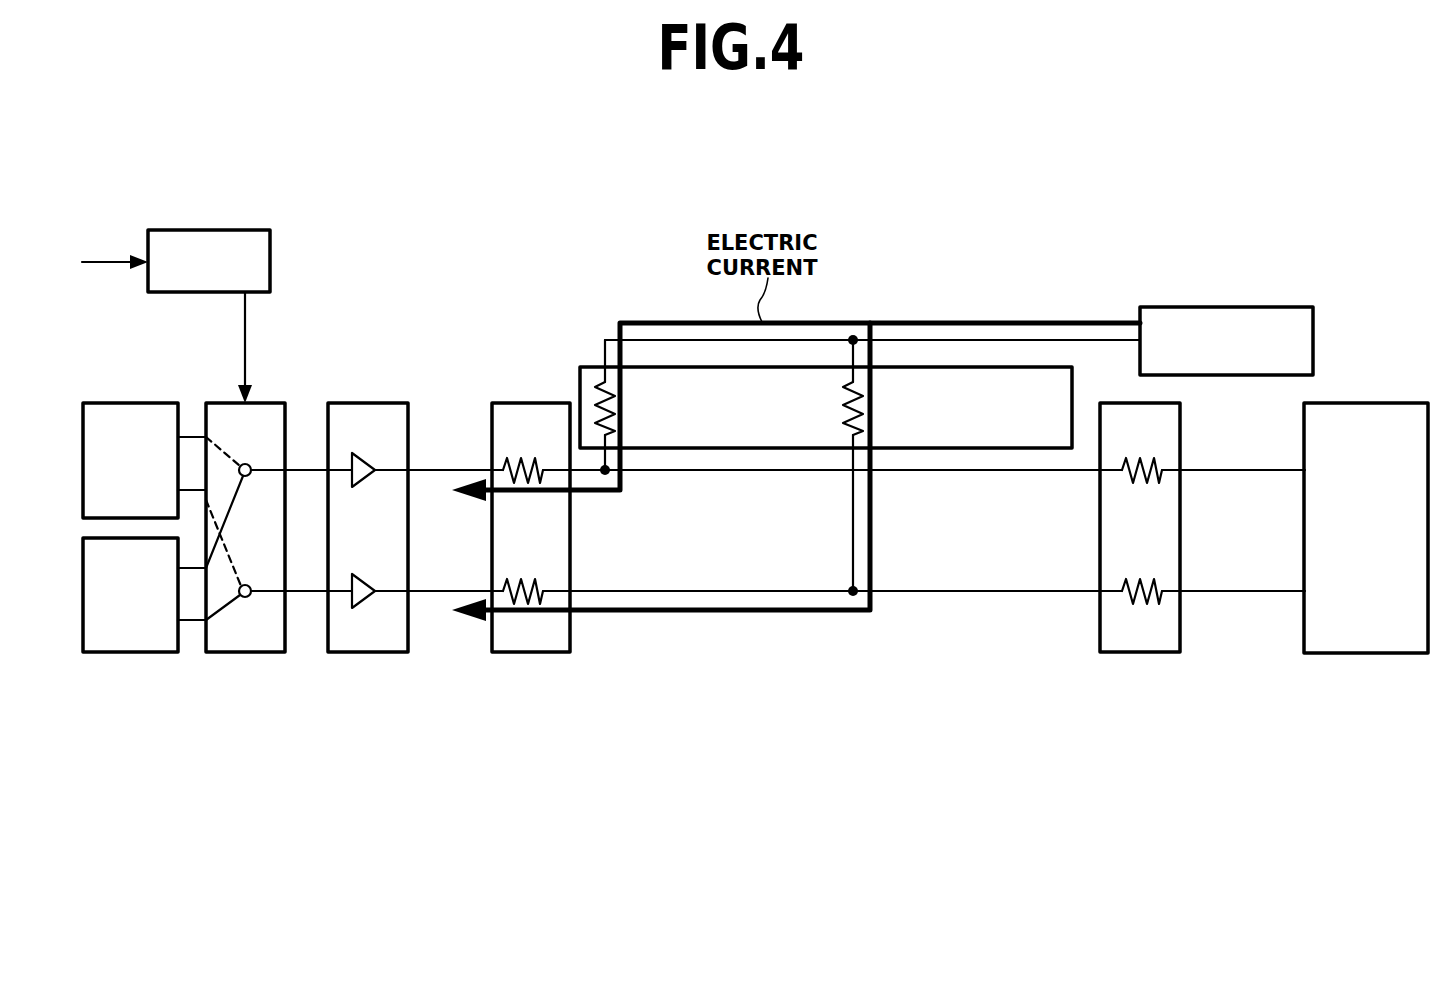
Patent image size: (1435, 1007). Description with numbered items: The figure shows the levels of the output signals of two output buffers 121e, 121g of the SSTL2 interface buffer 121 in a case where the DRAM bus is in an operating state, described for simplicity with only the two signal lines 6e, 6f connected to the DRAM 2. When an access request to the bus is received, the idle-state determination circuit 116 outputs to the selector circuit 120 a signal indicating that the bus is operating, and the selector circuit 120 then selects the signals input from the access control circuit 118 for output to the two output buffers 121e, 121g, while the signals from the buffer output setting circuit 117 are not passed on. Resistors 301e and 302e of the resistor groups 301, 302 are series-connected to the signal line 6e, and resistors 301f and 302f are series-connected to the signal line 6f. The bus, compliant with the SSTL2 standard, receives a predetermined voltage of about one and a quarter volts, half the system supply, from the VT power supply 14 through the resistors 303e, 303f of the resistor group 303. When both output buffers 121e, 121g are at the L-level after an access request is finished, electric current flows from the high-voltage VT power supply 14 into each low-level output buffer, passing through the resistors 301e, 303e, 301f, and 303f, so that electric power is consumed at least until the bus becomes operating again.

The DRAM 2 is at (1372, 653).
The VT power supply 14 is at (1315, 338).
The idle-state determination circuit 116 is at (270, 262).
The buffer output setting circuit 117 is at (120, 403).
The access control circuit 118 is at (128, 653).
The selector circuit 120 is at (247, 653).
The SSTL2 interface buffer 121 is at (408, 560).
The output buffer 121e is at (380, 459).
The output buffer 121g is at (380, 581).
The resistors 301 is at (572, 499).
The resistor 301e is at (524, 453).
The resistor 301f is at (520, 578).
The resistors 302 is at (1184, 564).
The resistor 302e is at (1138, 458).
The resistor 302f is at (1137, 580).
The resistors 303 is at (860, 430).
The resistor 303e is at (613, 413).
The resistor 303f is at (847, 407).
The signal line 6e is at (747, 472).
The signal line 6f is at (747, 593).